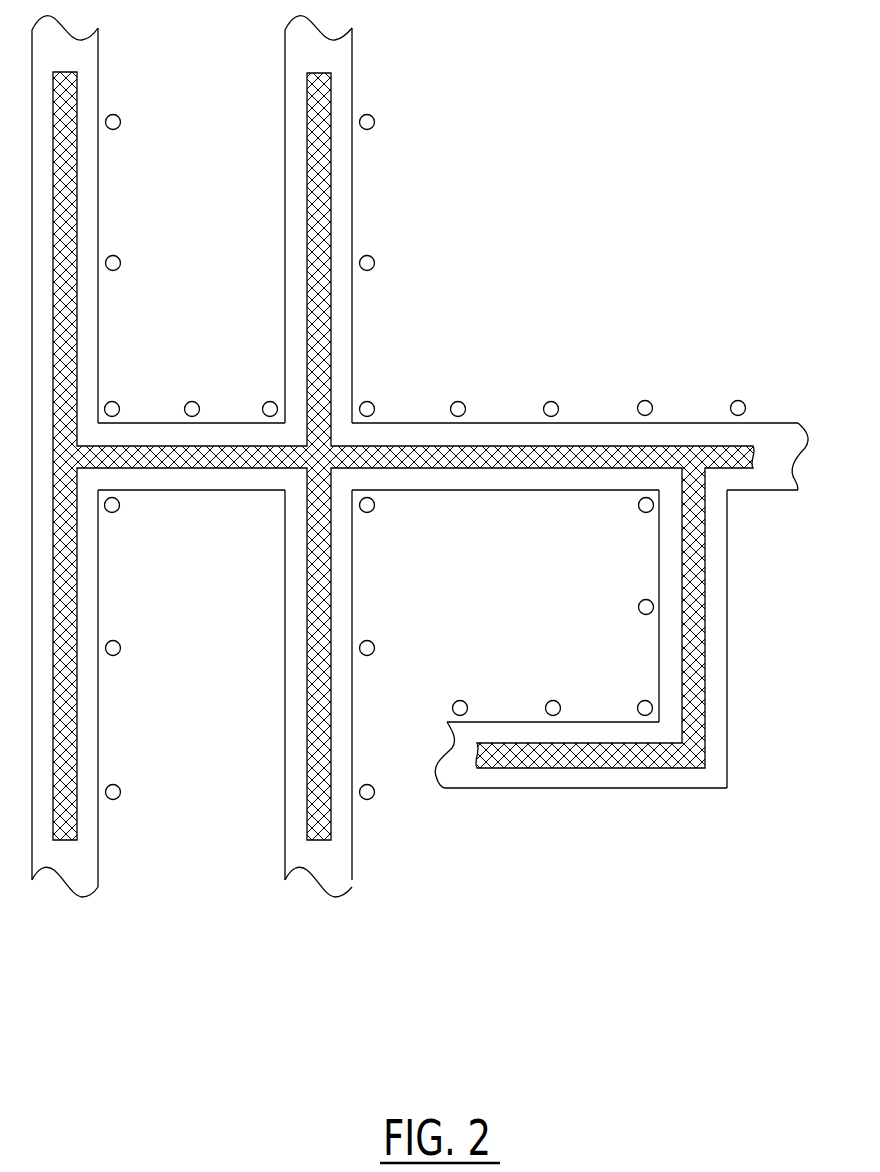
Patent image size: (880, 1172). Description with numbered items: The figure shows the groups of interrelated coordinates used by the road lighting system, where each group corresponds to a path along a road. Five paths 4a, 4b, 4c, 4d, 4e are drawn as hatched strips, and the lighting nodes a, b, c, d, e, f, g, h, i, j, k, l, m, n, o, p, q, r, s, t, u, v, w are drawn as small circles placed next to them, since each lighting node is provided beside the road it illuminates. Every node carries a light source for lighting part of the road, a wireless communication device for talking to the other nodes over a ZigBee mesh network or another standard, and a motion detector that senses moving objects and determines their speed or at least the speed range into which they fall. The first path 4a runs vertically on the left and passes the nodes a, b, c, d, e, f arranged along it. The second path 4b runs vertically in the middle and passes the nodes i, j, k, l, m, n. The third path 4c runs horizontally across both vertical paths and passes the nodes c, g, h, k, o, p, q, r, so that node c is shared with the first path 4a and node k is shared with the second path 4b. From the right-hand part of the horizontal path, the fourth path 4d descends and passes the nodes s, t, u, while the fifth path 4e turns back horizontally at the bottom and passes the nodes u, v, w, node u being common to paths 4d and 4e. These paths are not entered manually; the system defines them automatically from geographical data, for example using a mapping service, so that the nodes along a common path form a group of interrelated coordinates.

The path 4a is at (66, 184).
The path 4b is at (318, 186).
The path 4c is at (200, 469).
The path 4d is at (676, 624).
The path 4e is at (622, 768).
The lighting node a is at (118, 117).
The lighting node b is at (118, 258).
The lighting node c is at (117, 404).
The lighting node d is at (117, 510).
The lighting node e is at (118, 643).
The lighting node f is at (118, 787).
The lighting node g is at (197, 404).
The lighting node h is at (265, 404).
The lighting node i is at (372, 117).
The lighting node j is at (372, 258).
The lighting node k is at (372, 404).
The lighting node l is at (372, 510).
The lighting node m is at (372, 643).
The lighting node n is at (372, 787).
The lighting node o is at (463, 404).
The lighting node p is at (556, 404).
The lighting node q is at (650, 403).
The lighting node r is at (743, 403).
The lighting node s is at (641, 510).
The lighting node t is at (641, 612).
The lighting node u is at (640, 703).
The lighting node v is at (558, 703).
The lighting node w is at (465, 703).